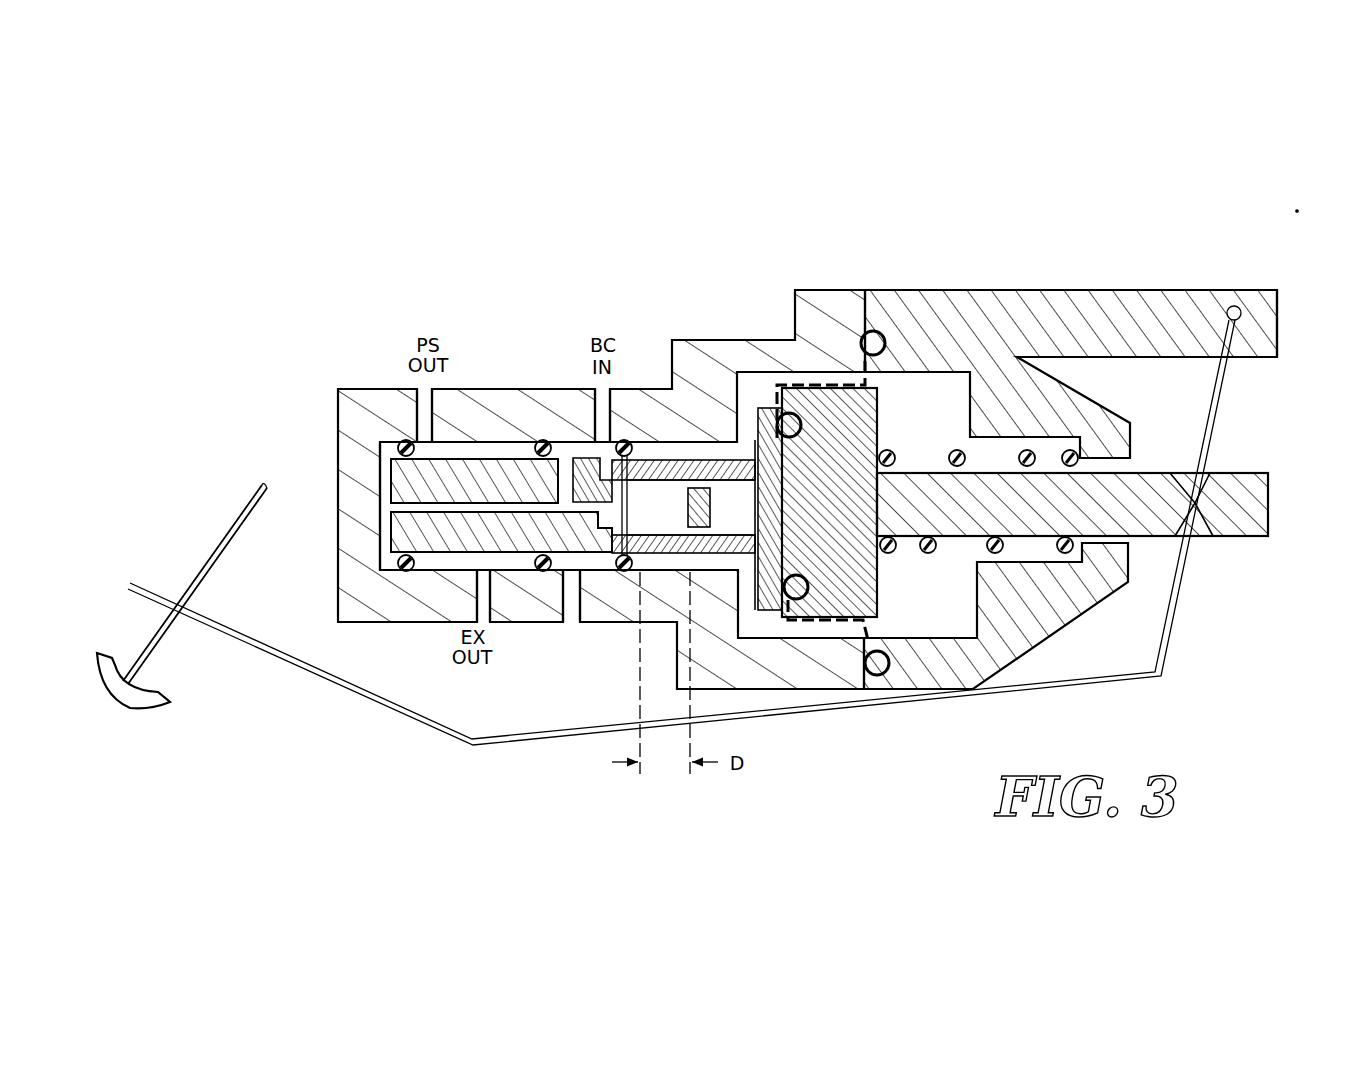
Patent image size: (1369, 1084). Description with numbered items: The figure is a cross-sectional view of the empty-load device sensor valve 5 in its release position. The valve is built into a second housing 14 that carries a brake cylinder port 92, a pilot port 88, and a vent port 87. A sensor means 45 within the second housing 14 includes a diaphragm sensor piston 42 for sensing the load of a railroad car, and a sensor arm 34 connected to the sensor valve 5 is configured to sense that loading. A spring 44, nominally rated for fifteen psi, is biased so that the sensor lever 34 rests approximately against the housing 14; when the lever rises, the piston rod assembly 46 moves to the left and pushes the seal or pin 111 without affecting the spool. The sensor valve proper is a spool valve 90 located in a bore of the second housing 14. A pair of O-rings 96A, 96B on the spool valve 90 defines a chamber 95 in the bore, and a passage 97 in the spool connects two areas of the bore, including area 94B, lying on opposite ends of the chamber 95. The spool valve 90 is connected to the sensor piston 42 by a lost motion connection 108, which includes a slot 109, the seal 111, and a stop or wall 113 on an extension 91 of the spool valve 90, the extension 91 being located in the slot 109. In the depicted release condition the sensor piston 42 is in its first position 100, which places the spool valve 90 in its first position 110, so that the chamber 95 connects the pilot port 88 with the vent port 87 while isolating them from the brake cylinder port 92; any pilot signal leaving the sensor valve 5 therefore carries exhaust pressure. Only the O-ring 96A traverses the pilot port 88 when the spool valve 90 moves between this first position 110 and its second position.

The sensor valve 5 is at (1313, 323).
The second housing 14 is at (1068, 284).
The sensor arm 34 is at (198, 687).
The sensor piston 42 is at (863, 435).
The spring 44 is at (1042, 442).
The sensor means 45 is at (1039, 614).
The piston rod assembly 46 is at (1279, 549).
The vent port 87 is at (472, 672).
The pilot port 88 is at (444, 384).
The spool valve 90 is at (403, 534).
The extension 91 is at (711, 510).
The brake cylinder port 92 is at (587, 380).
The area in the bore 94B is at (572, 564).
The chamber 95 is at (463, 565).
The O-ring 96A is at (405, 440).
The O-ring 96B is at (543, 440).
The passage 97 is at (390, 507).
The first position 100 is at (763, 387).
The lost motion connection 108 is at (662, 567).
The slot 109 is at (667, 457).
The first position 110 is at (376, 487).
The seal 111 is at (619, 573).
The stop 113 is at (690, 492).